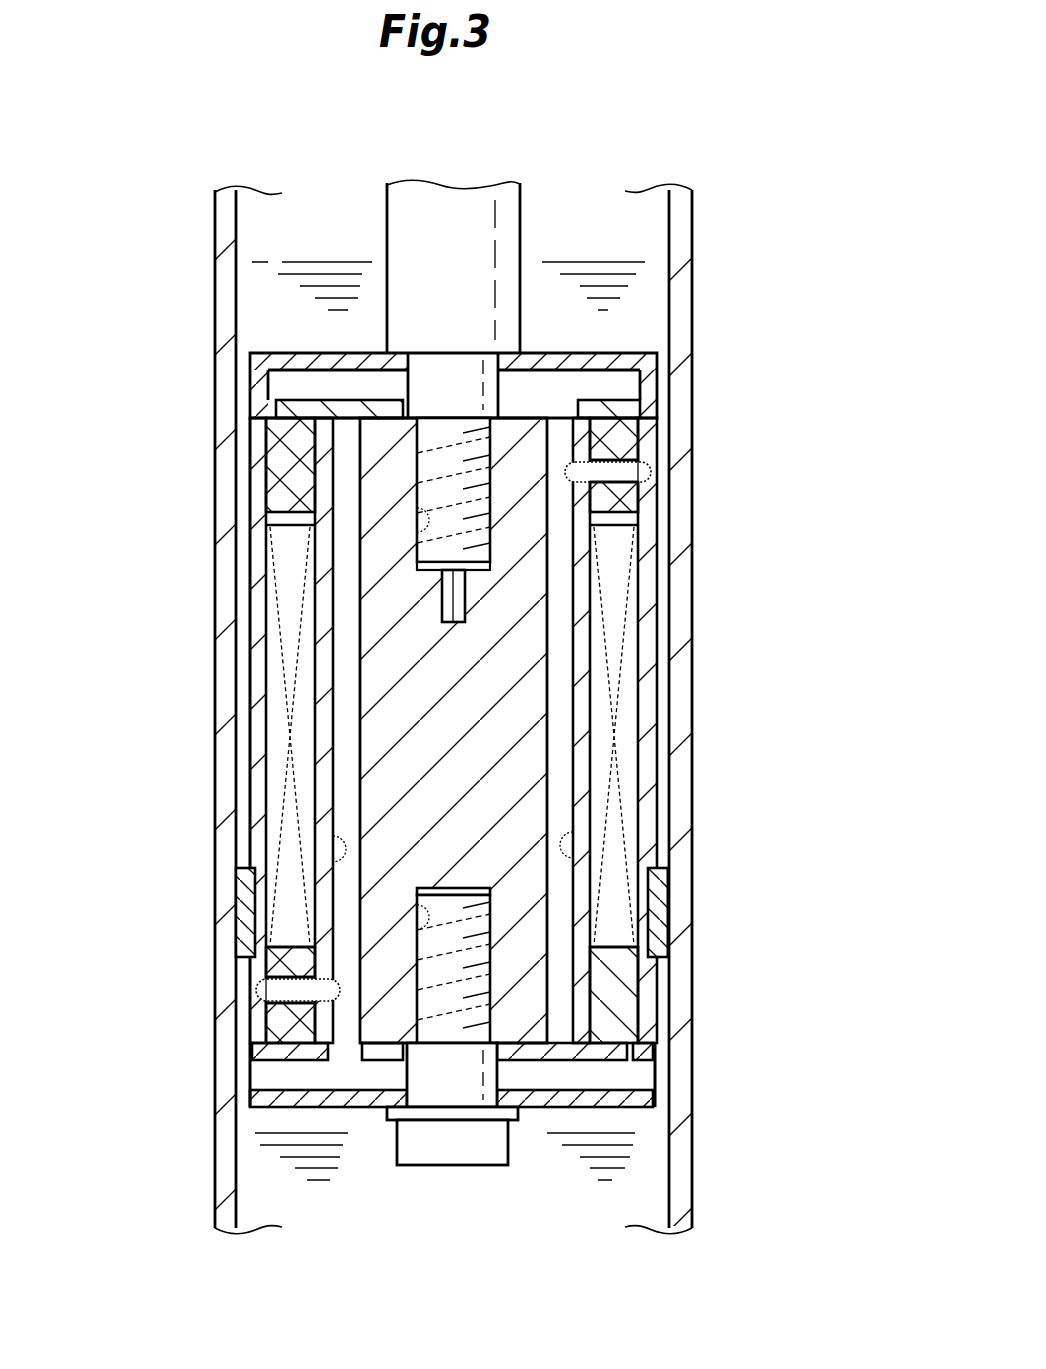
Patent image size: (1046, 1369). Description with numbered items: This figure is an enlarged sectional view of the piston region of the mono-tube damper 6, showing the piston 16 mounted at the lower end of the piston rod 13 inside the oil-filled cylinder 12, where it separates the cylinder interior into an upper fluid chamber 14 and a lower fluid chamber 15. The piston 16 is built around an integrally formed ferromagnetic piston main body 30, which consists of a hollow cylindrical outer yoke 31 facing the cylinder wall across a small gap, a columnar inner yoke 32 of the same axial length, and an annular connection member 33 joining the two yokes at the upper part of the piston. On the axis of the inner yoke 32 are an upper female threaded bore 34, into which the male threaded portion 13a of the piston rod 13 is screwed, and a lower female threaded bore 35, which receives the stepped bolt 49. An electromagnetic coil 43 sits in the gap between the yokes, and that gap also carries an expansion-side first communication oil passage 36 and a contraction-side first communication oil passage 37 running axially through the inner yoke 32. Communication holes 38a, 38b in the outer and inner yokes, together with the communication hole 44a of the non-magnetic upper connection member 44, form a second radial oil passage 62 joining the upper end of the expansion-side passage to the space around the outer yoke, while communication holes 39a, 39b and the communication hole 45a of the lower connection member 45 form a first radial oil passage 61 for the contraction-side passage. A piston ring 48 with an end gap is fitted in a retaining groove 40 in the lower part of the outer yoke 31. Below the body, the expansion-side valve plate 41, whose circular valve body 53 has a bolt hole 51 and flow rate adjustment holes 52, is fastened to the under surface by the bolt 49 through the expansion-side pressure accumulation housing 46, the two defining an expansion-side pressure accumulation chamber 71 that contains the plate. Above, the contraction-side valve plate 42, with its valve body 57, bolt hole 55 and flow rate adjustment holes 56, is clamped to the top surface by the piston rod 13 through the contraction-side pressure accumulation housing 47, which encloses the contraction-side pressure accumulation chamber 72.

The damper 6 is at (160, 238).
The cylinder 12 is at (222, 377).
The piston rod 13 is at (505, 215).
The male threaded portion 13a is at (420, 483).
The upper fluid chamber 14 is at (538, 334).
The lower fluid chamber 15 is at (550, 1212).
The piston 16 is at (238, 604).
The piston main body 30 is at (238, 755).
The outer yoke 31 is at (652, 778).
The inner yoke 32 is at (582, 650).
The annular connection member 33 is at (608, 522).
The female threaded bore 34 is at (425, 520).
The female threaded bore 35 is at (430, 917).
The expansion-side first communication oil passage 36 is at (568, 846).
The contraction-side first communication oil passage 37 is at (340, 849).
The communication hole 38a is at (632, 471).
The communication hole 38b is at (600, 445).
The communication hole 39a is at (268, 990).
The communication hole 39b is at (275, 965).
The retaining groove 40 is at (660, 915).
The expansion-side valve plate 41 is at (284, 1070).
The contraction-side valve plate 42 is at (602, 403).
The electromagnetic coil 43 is at (280, 670).
The upper connection member 44 is at (300, 442).
The communication hole 44a is at (612, 500).
The lower connection member 45 is at (615, 985).
The communication hole 45a is at (290, 1025).
The expansion-side pressure accumulation housing 46 is at (644, 1118).
The contraction-side pressure accumulation housing 47 is at (256, 345).
The piston ring 48 is at (662, 902).
The bolt 49 is at (440, 1160).
The bolt hole 51 is at (522, 1110).
The flow rate adjustment holes 52 is at (332, 1047).
The valve body 53 is at (604, 1056).
The bolt hole 55 is at (385, 398).
The flow rate adjustment holes 56 is at (613, 392).
The valve body 57 is at (315, 408).
The first radial oil passage 61 is at (152, 942).
The second radial oil passage 62 is at (762, 402).
The expansion-side pressure accumulation chamber 71 is at (573, 1078).
The contraction-side pressure accumulation chamber 72 is at (530, 384).